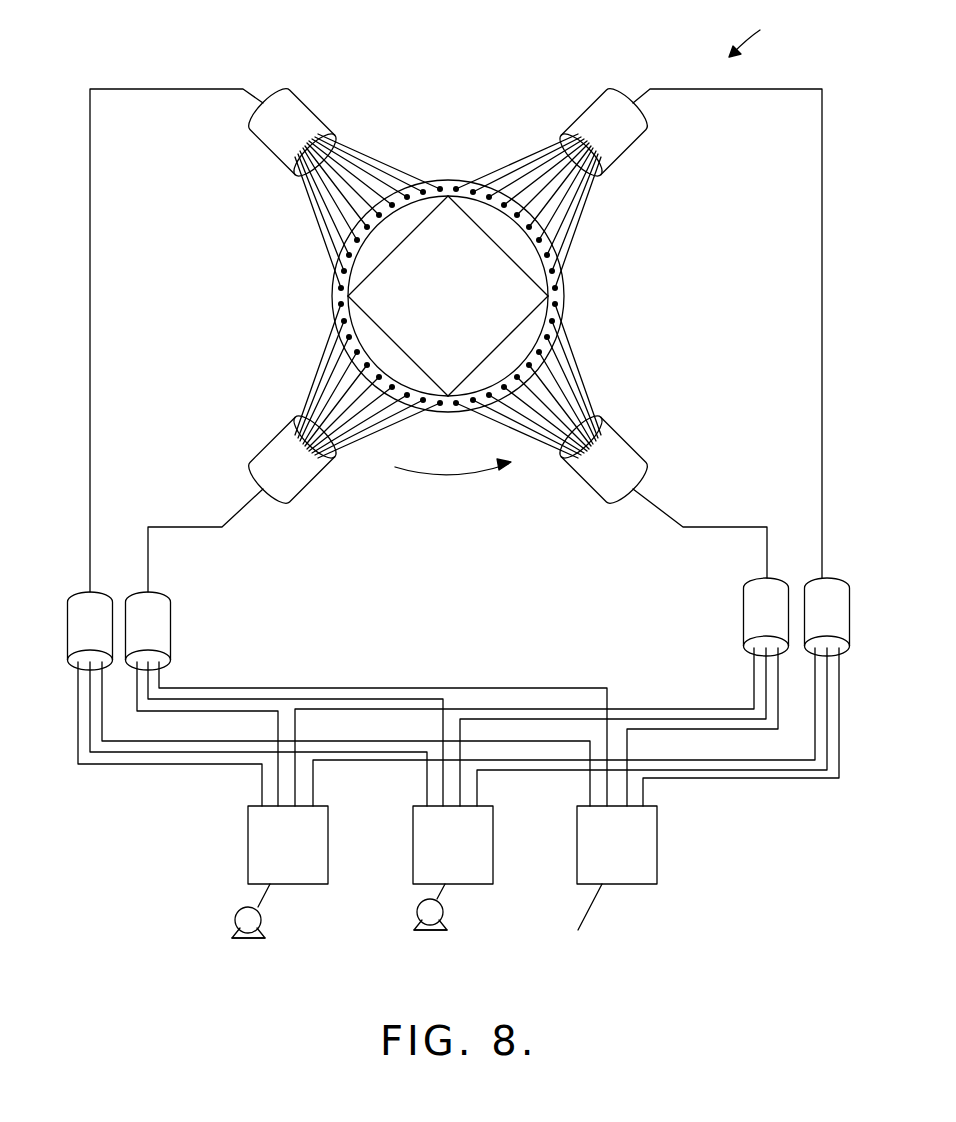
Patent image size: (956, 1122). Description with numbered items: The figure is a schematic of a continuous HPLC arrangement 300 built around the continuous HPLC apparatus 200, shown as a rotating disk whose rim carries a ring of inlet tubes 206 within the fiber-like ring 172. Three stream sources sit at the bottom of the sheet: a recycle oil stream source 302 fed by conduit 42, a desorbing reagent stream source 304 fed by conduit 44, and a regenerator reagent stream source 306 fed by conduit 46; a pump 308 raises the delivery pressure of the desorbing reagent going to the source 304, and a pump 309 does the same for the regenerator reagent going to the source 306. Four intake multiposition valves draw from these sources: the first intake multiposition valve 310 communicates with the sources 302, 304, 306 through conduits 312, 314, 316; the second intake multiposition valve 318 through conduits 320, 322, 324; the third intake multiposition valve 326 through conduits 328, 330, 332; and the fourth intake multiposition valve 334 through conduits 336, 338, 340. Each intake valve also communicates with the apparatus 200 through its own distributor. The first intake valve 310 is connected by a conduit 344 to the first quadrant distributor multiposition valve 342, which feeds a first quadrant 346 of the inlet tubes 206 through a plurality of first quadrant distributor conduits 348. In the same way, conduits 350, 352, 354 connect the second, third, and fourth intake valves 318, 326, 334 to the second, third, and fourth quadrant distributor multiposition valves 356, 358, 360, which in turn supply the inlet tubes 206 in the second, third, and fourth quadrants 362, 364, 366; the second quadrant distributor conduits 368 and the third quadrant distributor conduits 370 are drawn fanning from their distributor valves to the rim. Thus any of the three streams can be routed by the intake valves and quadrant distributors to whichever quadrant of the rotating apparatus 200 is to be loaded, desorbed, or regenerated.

The continuous HPLC arrangement 300 is at (803, 40).
The continuous HPLC apparatus 200 is at (483, 327).
The fiber ring 172 is at (380, 180).
The inlet tubes 206 is at (455, 185).
The fourth quadrant 366 is at (399, 244).
The first quadrant 346 is at (495, 246).
The third quadrant 364 is at (402, 349).
The second quadrant 362 is at (497, 346).
The first quadrant distributor conduits 348 is at (572, 237).
The third quadrant distributor conduits 370 is at (325, 367).
The second quadrant distributor conduits 368 is at (575, 372).
The fourth quadrant distributor multiposition valve 360 is at (273, 146).
The first quadrant distributor multiposition valve 342 is at (618, 152).
The third quadrant distributor multiposition valve 358 is at (303, 476).
The second quadrant distributor multiposition valve 356 is at (597, 478).
The conduit 354 is at (93, 342).
The conduit 344 is at (822, 373).
The conduit 352 is at (187, 527).
The conduit 350 is at (667, 507).
The fourth intake multiposition valve 334 is at (79, 592).
The third intake multiposition valve 326 is at (167, 632).
The second intake multiposition valve 318 is at (745, 603).
The first intake multiposition valve 310 is at (835, 585).
The conduit 328 is at (542, 687).
The conduit 330 is at (383, 688).
The conduit 332 is at (270, 787).
The conduit 340 is at (150, 766).
The conduit 338 is at (422, 790).
The conduit 336 is at (588, 792).
The conduit 324 is at (300, 788).
The conduit 322 is at (478, 792).
The conduit 320 is at (645, 795).
The conduit 316 is at (817, 757).
The conduit 314 is at (828, 732).
The conduit 312 is at (839, 706).
The regenerator reagent stream source 306 is at (300, 885).
The desorbing reagent stream source 304 is at (475, 885).
The recycle oil stream source 302 is at (637, 885).
The pump 309 is at (268, 925).
The pump 308 is at (445, 919).
The conduit 46 is at (238, 923).
The conduit 44 is at (423, 923).
The conduit 42 is at (582, 924).